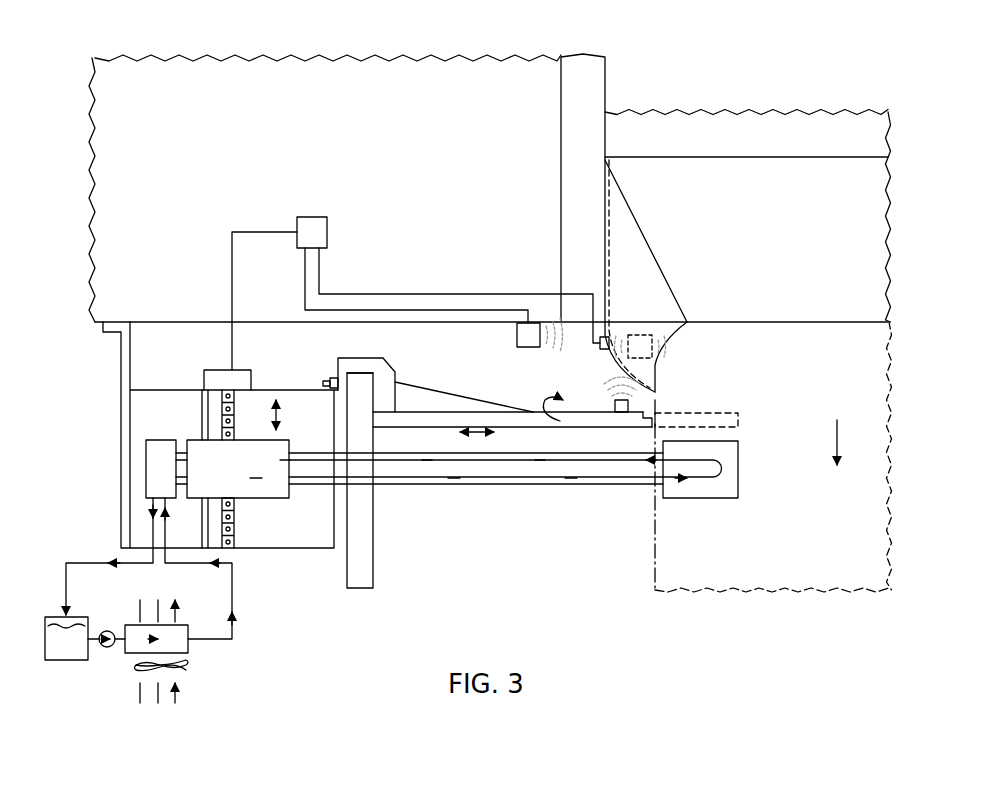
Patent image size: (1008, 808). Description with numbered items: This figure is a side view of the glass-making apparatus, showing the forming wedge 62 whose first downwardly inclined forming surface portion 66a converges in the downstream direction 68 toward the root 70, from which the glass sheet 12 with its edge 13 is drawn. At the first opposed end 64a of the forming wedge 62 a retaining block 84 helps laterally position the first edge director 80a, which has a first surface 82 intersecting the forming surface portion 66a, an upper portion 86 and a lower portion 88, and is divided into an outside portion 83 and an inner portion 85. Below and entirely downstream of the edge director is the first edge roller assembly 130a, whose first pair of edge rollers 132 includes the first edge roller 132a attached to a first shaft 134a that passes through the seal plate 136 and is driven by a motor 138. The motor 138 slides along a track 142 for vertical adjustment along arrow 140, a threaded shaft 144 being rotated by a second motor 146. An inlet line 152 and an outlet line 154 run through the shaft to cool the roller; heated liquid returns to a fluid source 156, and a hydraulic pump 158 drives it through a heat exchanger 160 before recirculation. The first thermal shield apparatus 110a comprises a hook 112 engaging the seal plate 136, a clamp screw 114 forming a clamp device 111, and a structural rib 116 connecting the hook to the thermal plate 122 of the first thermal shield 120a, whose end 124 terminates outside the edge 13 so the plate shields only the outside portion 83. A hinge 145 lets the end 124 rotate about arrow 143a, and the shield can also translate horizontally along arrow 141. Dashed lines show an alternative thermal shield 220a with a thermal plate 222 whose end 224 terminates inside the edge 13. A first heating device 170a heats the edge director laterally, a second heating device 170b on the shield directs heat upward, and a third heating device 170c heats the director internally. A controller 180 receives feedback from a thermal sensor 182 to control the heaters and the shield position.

The glass sheet 12 is at (793, 591).
The edge of the glass sheet 13 is at (655, 566).
The forming wedge 62 is at (805, 88).
The first opposed end of the forming wedge 64a is at (647, 132).
The first downwardly inclined forming surface portion 66a is at (805, 262).
The downstream direction 68 is at (838, 440).
The root 70 is at (853, 322).
The first edge director 80a is at (640, 198).
The first surface 82 is at (641, 252).
The outside portion of the first edge director 83 is at (605, 282).
The retaining block 84 is at (330, 184).
The inner portion of the first edge director 85 is at (688, 300).
The upper portion of the edge director 86 is at (652, 262).
The lower portion of the edge director 88 is at (660, 342).
The first thermal shield apparatus 110a is at (518, 446).
The clamp device 111 is at (387, 350).
The hook 112 is at (340, 357).
The clamp screw 114 is at (328, 381).
The structural rib 116 is at (418, 394).
The first thermal shield 120a is at (540, 410).
The thermal plate 122 is at (602, 406).
The end of the thermal plate 124 is at (652, 425).
The first edge roller assembly 130a is at (634, 488).
The first pair of edge rollers 132 is at (733, 505).
The first edge roller 132a is at (734, 487).
The first shaft 134a is at (456, 485).
The seal plate 136 is at (362, 597).
The motor 138 is at (274, 498).
The vertical direction arrow 140 is at (278, 415).
The horizontal direction arrow 141 is at (475, 428).
The track 142 is at (197, 530).
The rotation arrow about the transverse direction 143a is at (560, 436).
The threaded shaft 144 is at (233, 530).
The hinge 145 is at (580, 430).
The motor 146 is at (217, 370).
The inlet line 152 is at (400, 486).
The outlet line 154 is at (455, 466).
The fluid source 156 is at (64, 660).
The hydraulic pump 158 is at (107, 647).
The heat exchanger 160 is at (198, 658).
The first heating device 170a is at (517, 336).
The second heating device 170b is at (630, 406).
The third heating device 170c is at (636, 334).
The controller 180 is at (327, 232).
The thermal sensor 182 is at (598, 349).
The first thermal shield (alternative) 220a is at (736, 408).
The thermal plate 222 is at (710, 413).
The end of the thermal plate 224 is at (739, 414).